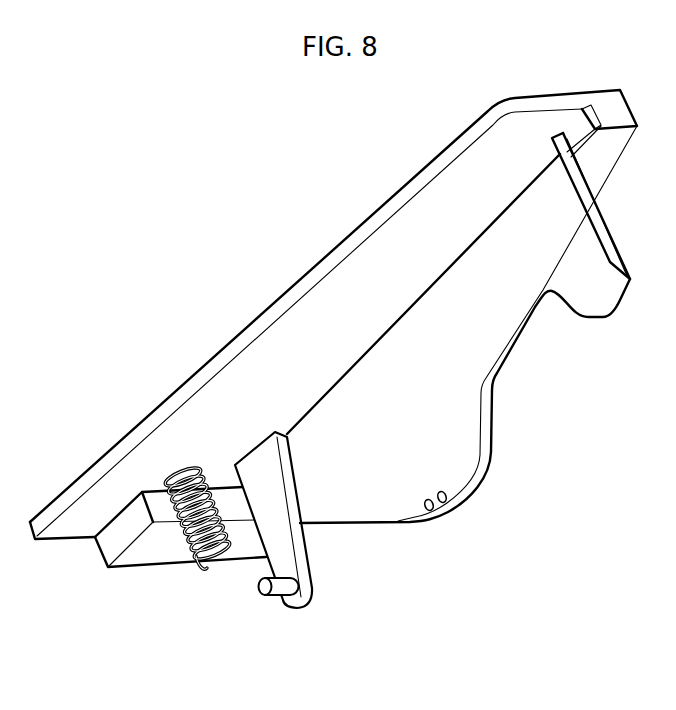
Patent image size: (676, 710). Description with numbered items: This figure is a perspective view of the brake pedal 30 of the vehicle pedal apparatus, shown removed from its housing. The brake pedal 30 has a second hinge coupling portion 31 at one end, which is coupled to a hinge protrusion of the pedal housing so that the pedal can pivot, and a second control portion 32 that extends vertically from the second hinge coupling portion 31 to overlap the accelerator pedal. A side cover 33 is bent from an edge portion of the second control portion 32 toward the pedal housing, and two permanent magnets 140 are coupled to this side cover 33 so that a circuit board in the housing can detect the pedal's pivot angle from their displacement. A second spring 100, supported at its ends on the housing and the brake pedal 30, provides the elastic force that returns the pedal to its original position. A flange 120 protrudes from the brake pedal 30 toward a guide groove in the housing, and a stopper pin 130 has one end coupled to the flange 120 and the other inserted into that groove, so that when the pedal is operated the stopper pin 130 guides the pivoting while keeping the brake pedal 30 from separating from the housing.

The brake pedal 30 is at (332, 239).
The second hinge coupling portion 31 is at (65, 530).
The second control portion 32 is at (307, 317).
The side cover 33 is at (467, 433).
The second spring 100 is at (205, 572).
The flange 120 is at (313, 578).
The stopper pin 130 is at (282, 590).
The permanent magnets 140 is at (432, 510).